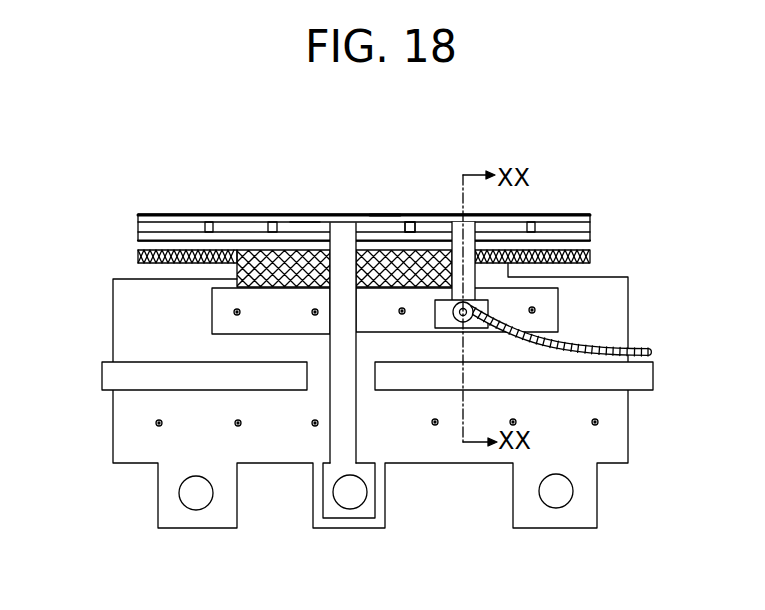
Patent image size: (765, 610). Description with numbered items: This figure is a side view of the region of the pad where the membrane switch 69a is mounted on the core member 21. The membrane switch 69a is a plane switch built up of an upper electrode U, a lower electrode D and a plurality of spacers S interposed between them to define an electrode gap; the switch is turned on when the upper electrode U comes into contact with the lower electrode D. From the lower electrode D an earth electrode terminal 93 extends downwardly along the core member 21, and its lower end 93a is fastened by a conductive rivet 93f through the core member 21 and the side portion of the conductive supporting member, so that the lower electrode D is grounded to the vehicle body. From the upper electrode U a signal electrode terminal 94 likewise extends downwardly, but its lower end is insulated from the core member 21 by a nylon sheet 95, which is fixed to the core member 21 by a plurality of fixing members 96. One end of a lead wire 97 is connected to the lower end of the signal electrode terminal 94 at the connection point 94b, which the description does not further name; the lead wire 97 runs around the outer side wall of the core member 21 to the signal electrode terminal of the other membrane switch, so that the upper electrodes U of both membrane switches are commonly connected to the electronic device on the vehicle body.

The core member 21 is at (610, 448).
The membrane switch 69a is at (230, 215).
The lower electrode D is at (303, 232).
The upper electrode U is at (384, 213).
The spacers S is at (412, 213).
The earth electrode terminal 93 is at (343, 213).
The lower end of earth electrode terminal 93a is at (333, 515).
The conductive rivet 93f is at (352, 497).
The signal electrode terminal 94 is at (440, 328).
The pin of lever 94b is at (460, 322).
The nylon sheet 95 is at (218, 313).
The fixing members 96 is at (535, 310).
The lead wire 97 is at (648, 350).